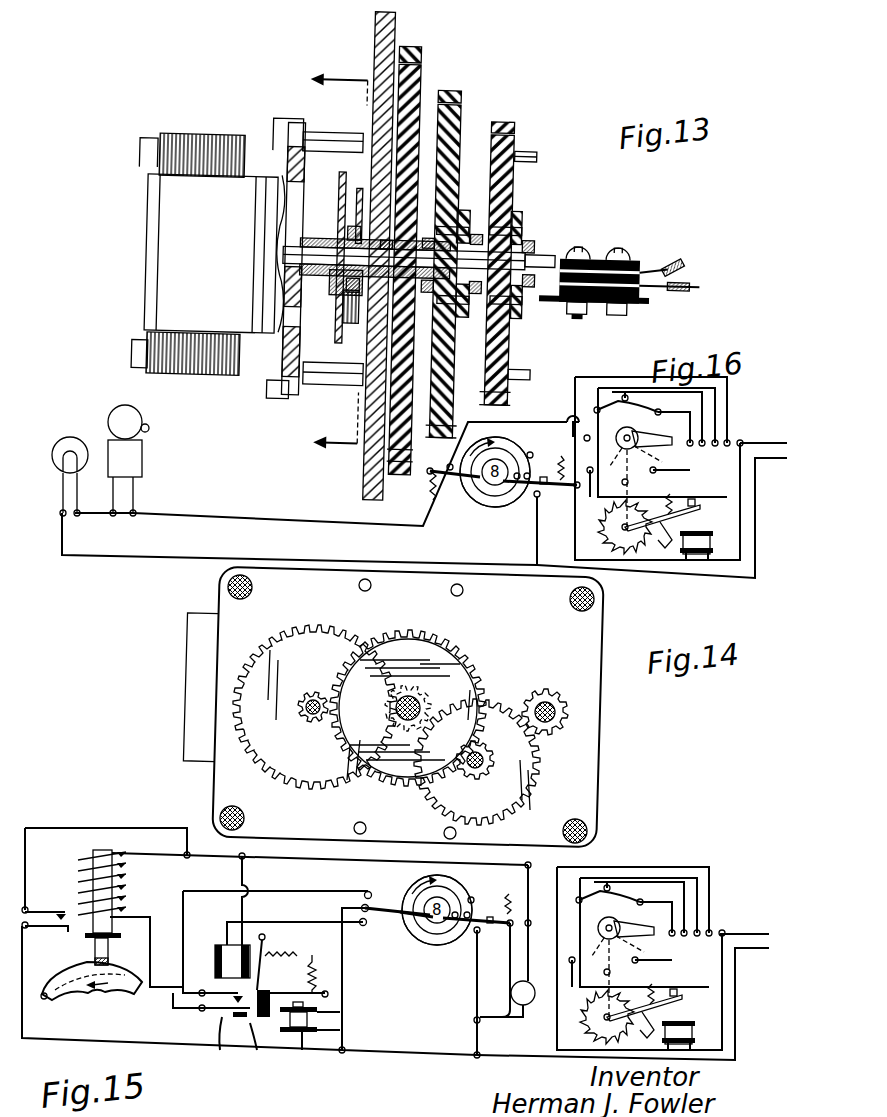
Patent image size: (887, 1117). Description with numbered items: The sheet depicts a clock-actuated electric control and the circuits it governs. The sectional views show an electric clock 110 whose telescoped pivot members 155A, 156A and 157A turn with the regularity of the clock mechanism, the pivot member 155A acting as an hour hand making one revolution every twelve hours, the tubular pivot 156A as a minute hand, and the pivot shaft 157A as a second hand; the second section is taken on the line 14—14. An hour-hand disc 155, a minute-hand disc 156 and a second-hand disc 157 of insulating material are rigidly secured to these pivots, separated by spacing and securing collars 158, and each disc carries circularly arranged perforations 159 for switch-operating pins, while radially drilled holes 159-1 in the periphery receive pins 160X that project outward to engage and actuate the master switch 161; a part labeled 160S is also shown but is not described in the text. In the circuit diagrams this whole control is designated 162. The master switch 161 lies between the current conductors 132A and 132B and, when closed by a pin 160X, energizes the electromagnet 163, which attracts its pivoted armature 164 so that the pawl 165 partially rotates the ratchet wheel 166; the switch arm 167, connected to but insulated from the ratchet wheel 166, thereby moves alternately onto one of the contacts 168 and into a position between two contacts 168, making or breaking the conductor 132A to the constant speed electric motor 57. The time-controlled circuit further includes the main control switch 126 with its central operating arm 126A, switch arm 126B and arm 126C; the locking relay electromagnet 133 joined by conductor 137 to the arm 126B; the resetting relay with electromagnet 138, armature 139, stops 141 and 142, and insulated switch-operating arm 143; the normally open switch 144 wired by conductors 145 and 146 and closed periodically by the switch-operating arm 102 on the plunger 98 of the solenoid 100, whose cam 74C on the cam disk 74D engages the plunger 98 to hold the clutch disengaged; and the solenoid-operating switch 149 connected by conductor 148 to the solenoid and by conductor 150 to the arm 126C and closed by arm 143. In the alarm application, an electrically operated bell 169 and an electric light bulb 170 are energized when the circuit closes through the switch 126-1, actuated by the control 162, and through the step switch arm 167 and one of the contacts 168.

In FIG. 13, the section line 14 is at (334, 267).
In FIG. 15, the constant speed electric motor 57 is at (527, 982).
In FIG. 15, the cam 74C is at (132, 999).
In FIG. 15, the cam disk 74D is at (44, 1000).
In FIG. 15, the plunger 98 is at (109, 950).
In FIG. 15, the solenoid 100 is at (84, 865).
In FIG. 15, the switch-operating arm 102 is at (66, 933).
In FIG. 13, the electric clock 110 is at (299, 414).
In FIG. 14, the electric clock 110 is at (190, 662).
In FIG. 15, the main control switch 126 is at (398, 936).
In FIG. 15, the central operating arm 126A is at (401, 909).
In FIG. 15, the switch arm 126B is at (398, 916).
In FIG. 15, the main control switch arm 126C is at (370, 888).
In FIG. 16, the switch 126-1 is at (438, 503).
In FIG. 13, the current supply line 132A is at (686, 261).
In FIG. 16, the current supply line 132A is at (178, 517).
In FIG. 15, the current supply line 132A is at (341, 860).
In FIG. 13, the current supply line 132B is at (700, 281).
In FIG. 16, the current supply line 132B is at (134, 559).
In FIG. 15, the current supply line 132B is at (345, 1006).
In FIG. 15, the locking relay electromagnet 133 is at (210, 959).
In FIG. 15, the conductor 137 is at (303, 921).
In FIG. 15, the electromagnet 138 is at (340, 1030).
In FIG. 15, the armature 139 is at (340, 1012).
In FIG. 15, the stop 141 is at (308, 980).
In FIG. 15, the stop 142 is at (272, 958).
In FIG. 15, the insulated switch-operating arm 143 is at (257, 1052).
In FIG. 15, the normally open switch 144 is at (57, 920).
In FIG. 15, the conductor 145 is at (92, 826).
In FIG. 15, the conductor 146 is at (140, 1053).
In FIG. 15, the conductor 148 is at (129, 919).
In FIG. 15, the solenoid-operating switch 149 is at (222, 1052).
In FIG. 15, the conductor 150 is at (300, 892).
In FIG. 13, the hour-hand disc 155 is at (417, 86).
In FIG. 13, the pivot member 155A is at (385, 246).
In FIG. 14, the pivot member 155A is at (396, 706).
In FIG. 13, the minute-hand disc 156 is at (458, 116).
In FIG. 13, the pivot member 156A is at (348, 250).
In FIG. 14, the pivot member 156A is at (396, 716).
In FIG. 13, the second-hand disc 157 is at (512, 190).
In FIG. 13, the pivot shaft 157A is at (522, 300).
In FIG. 14, the pivot shaft 157A is at (416, 700).
In FIG. 13, the spacing and securing collars 158 is at (466, 220).
In FIG. 13, the perforations 159 is at (417, 66).
In FIG. 13, the holes 159-1 is at (406, 48).
In FIG. 13, the stop 160S is at (535, 154).
In FIG. 16, the switch-operating pins 160X is at (528, 452).
In FIG. 15, the switch-operating pins 160X is at (471, 897).
In FIG. 13, the master switch 161 is at (630, 252).
In FIG. 16, the master switch 161 is at (536, 498).
In FIG. 15, the master switch 161 is at (464, 950).
In FIG. 16, the control 162 is at (478, 506).
In FIG. 15, the control 162 is at (447, 942).
In FIG. 16, the electromagnet 163 is at (712, 543).
In FIG. 15, the electromagnet 163 is at (715, 1035).
In FIG. 16, the pivoted armature 164 is at (700, 506).
In FIG. 15, the pivoted armature 164 is at (688, 1002).
In FIG. 16, the pawl 165 is at (665, 558).
In FIG. 15, the pawl 165 is at (638, 1032).
In FIG. 16, the ratchet wheel 166 is at (634, 556).
In FIG. 15, the ratchet wheel 166 is at (581, 1017).
In FIG. 16, the switch arm 167 is at (630, 452).
In FIG. 15, the switch arm 167 is at (608, 937).
In FIG. 16, the contacts 168 is at (646, 411).
In FIG. 15, the contacts 168 is at (609, 904).
In FIG. 16, the electrically operated bell 169 is at (127, 461).
In FIG. 16, the electric light bulb 170 is at (70, 447).